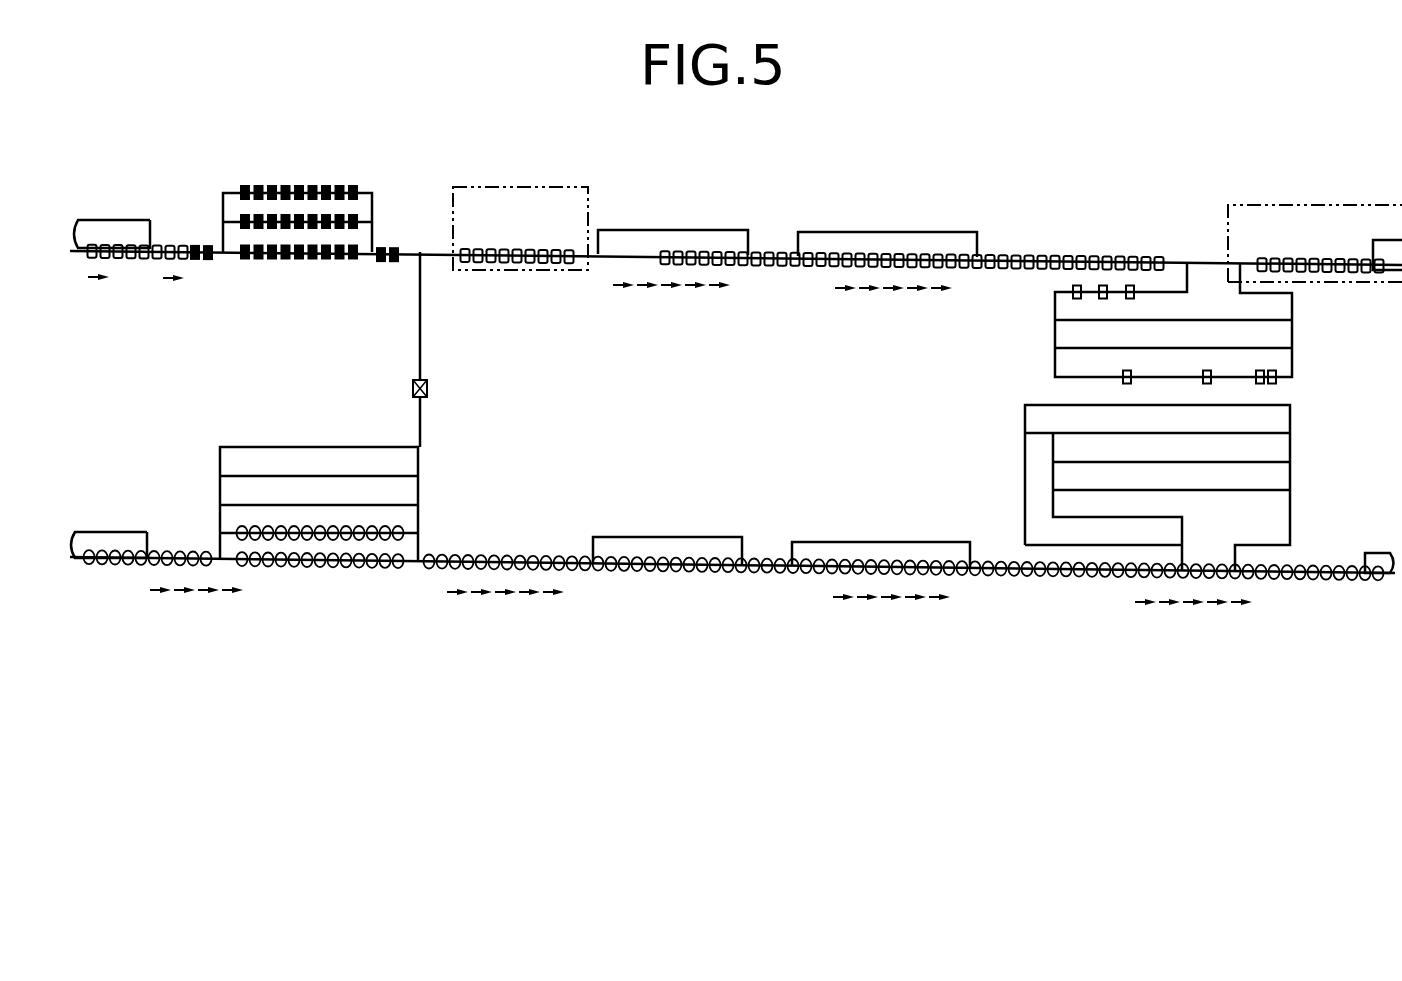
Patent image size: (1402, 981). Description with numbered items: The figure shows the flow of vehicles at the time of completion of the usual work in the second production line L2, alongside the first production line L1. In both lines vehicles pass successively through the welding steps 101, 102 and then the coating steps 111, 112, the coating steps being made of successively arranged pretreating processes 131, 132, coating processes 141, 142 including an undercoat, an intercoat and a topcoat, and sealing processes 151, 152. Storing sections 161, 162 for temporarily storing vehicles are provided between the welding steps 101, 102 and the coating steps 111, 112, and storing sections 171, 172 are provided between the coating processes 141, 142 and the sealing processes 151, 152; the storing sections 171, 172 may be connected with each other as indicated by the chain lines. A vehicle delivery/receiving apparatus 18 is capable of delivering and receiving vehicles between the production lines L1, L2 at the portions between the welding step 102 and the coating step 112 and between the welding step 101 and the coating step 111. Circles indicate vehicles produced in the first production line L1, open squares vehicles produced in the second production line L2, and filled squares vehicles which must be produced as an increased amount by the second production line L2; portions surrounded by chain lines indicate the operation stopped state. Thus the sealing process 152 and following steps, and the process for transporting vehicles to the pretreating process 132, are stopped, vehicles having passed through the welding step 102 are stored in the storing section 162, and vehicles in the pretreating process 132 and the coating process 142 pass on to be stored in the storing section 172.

The first production line L1 is at (176, 526).
The second production line L2 is at (174, 224).
The welding step 101 is at (113, 540).
The welding step 102 is at (103, 232).
The coating step 111 is at (1012, 600).
The coating step 112 is at (1047, 223).
The pretreating process 131 is at (668, 537).
The pretreating process 132 is at (655, 230).
The coating process 141 is at (870, 542).
The coating process 142 is at (907, 232).
The sealing process 151 is at (1378, 553).
The sealing process 152 is at (1367, 248).
The storing section 161 is at (292, 447).
The storing section 162 is at (372, 192).
The storing section 171 is at (1290, 448).
The storing section 172 is at (1292, 338).
The vehicle delivery/receiving apparatus 18 is at (428, 388).